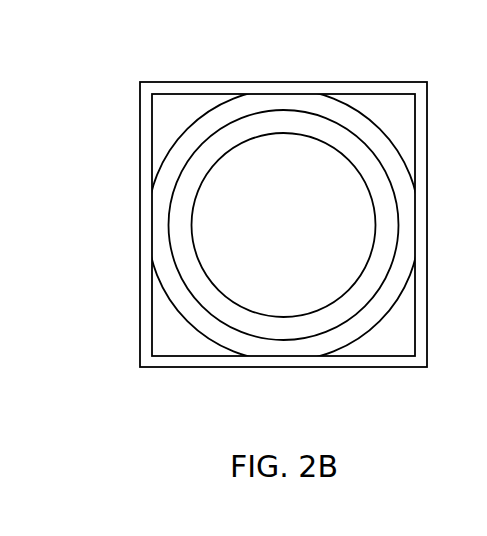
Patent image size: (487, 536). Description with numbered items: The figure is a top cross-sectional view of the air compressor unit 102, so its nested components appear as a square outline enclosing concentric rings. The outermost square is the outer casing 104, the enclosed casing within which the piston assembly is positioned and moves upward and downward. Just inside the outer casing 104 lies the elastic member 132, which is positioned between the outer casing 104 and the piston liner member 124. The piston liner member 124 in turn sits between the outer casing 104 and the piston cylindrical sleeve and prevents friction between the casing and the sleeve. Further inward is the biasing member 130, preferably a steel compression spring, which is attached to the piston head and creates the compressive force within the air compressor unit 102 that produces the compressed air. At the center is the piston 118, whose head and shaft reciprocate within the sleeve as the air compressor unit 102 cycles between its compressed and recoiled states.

The air compressor unit 102 is at (238, 44).
The outer casing 104 is at (333, 82).
The elastic member 132 is at (168, 125).
The piston liner member 124 is at (162, 228).
The biasing member 130 is at (200, 288).
The piston 118 is at (343, 237).